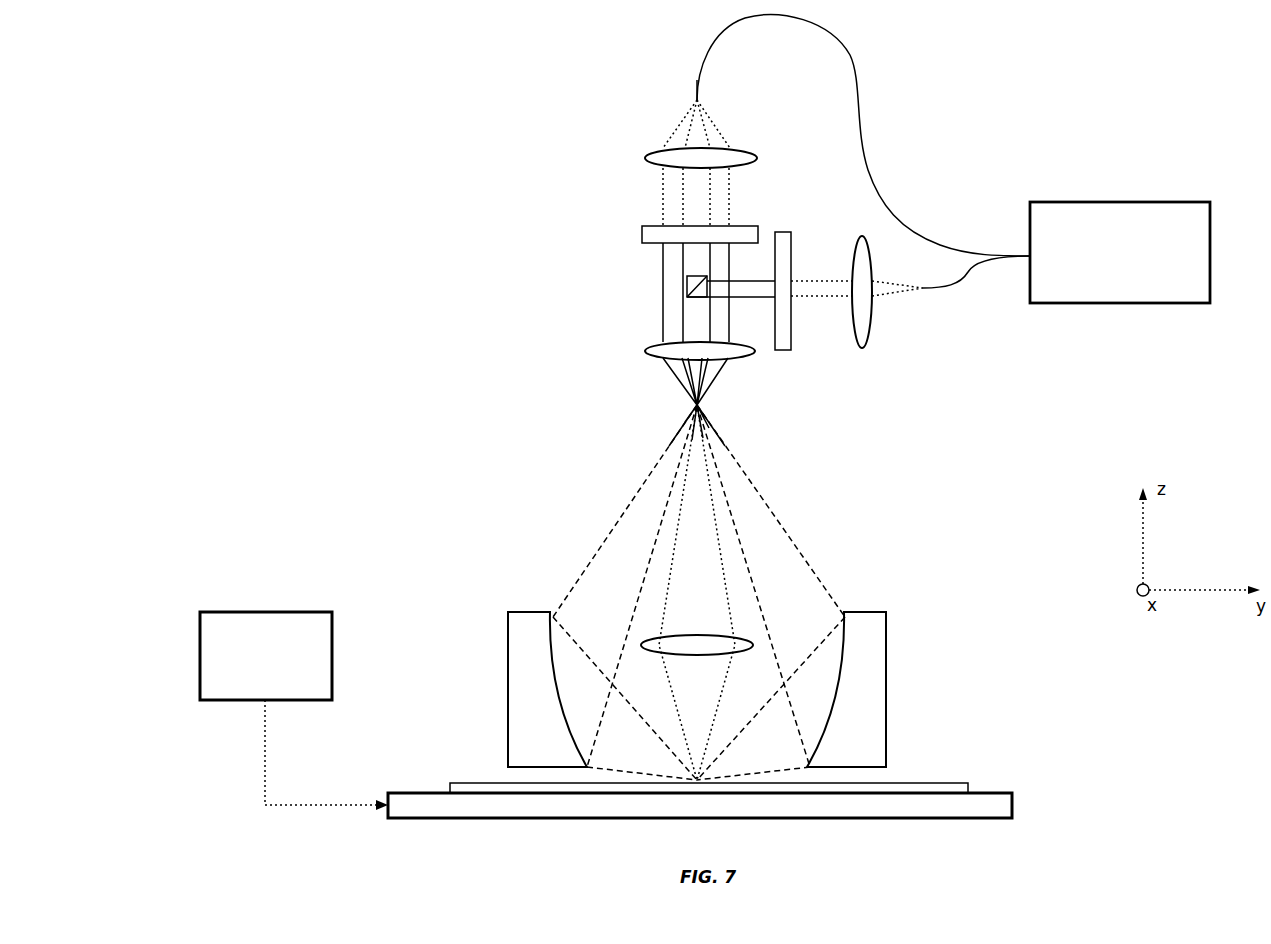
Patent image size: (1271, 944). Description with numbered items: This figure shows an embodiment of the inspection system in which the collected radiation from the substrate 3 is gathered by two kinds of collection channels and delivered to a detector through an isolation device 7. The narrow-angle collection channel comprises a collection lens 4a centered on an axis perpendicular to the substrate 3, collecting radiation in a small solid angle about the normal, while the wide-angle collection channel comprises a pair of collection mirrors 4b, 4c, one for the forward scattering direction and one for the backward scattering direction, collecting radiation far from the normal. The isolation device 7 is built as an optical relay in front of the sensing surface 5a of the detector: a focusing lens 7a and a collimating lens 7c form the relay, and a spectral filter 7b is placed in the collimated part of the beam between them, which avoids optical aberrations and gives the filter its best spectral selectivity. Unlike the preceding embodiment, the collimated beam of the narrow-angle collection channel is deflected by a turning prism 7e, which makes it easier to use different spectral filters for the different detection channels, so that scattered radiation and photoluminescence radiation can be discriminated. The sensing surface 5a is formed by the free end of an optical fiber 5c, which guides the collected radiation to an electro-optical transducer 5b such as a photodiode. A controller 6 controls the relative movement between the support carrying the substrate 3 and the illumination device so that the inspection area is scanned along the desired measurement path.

The isolation device 7 is at (490, 125).
The sensing surface 5a is at (697, 100).
The electro-optical transducer 5b is at (1075, 202).
The optical fiber 5c is at (725, 33).
The focusing lens 7a is at (645, 157).
The spectral filter 7b is at (642, 234).
The collimating lens 7c is at (645, 348).
The turning prism 7e is at (687, 285).
The collection lens 4a is at (641, 645).
The collection mirror 4b is at (892, 633).
The collection mirror 4c is at (508, 717).
The substrate 3 is at (486, 783).
The controller 6 is at (218, 700).